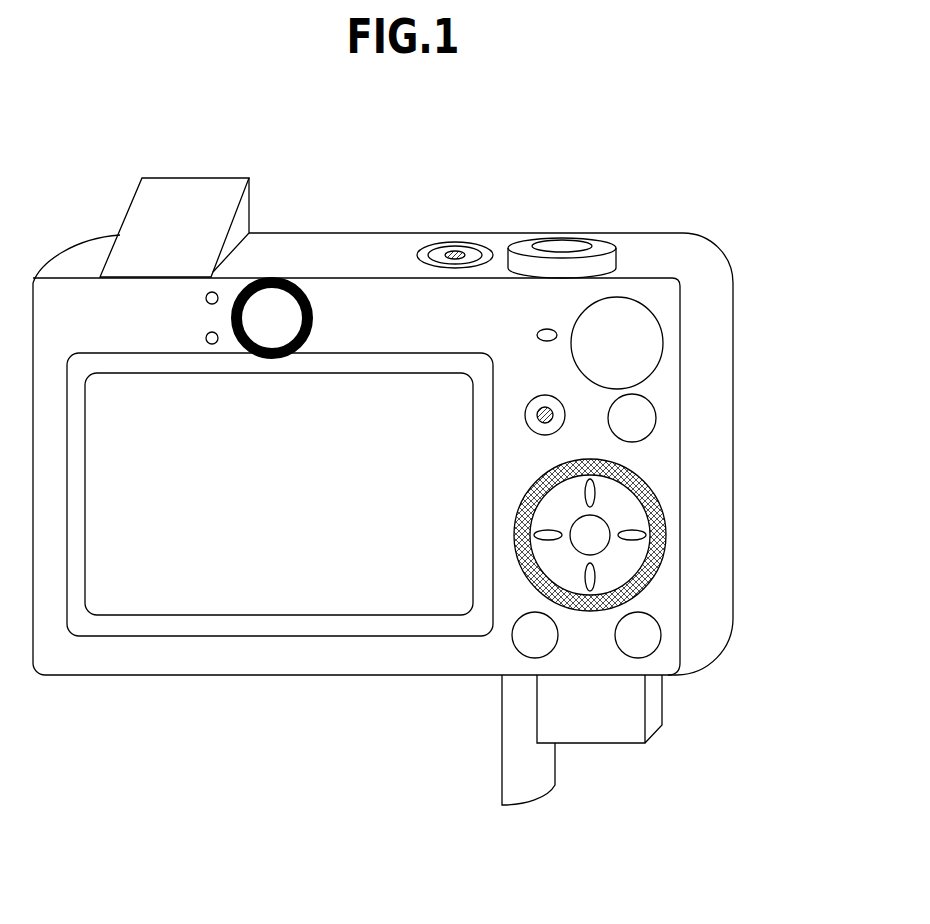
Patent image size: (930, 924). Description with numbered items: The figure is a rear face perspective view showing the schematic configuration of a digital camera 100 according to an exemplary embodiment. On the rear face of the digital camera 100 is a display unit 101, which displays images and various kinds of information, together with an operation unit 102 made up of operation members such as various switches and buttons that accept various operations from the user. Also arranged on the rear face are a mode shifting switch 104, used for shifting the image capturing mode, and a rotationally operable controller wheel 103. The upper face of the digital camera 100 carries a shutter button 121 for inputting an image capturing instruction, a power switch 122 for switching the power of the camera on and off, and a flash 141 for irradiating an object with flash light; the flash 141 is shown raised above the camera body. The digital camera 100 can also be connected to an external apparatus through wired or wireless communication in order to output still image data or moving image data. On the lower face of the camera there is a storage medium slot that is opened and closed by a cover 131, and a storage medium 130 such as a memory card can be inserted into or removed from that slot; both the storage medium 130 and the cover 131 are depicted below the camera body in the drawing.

The digital camera 100 is at (145, 712).
The display unit 101 is at (308, 593).
The operation unit 102 is at (562, 268).
The controller wheel 103 is at (530, 590).
The mode shifting switch 104 is at (628, 315).
The shutter button 121 is at (560, 242).
The power switch 122 is at (455, 248).
The storage medium 130 is at (656, 706).
The cover 131 is at (528, 790).
The flash 141 is at (190, 190).